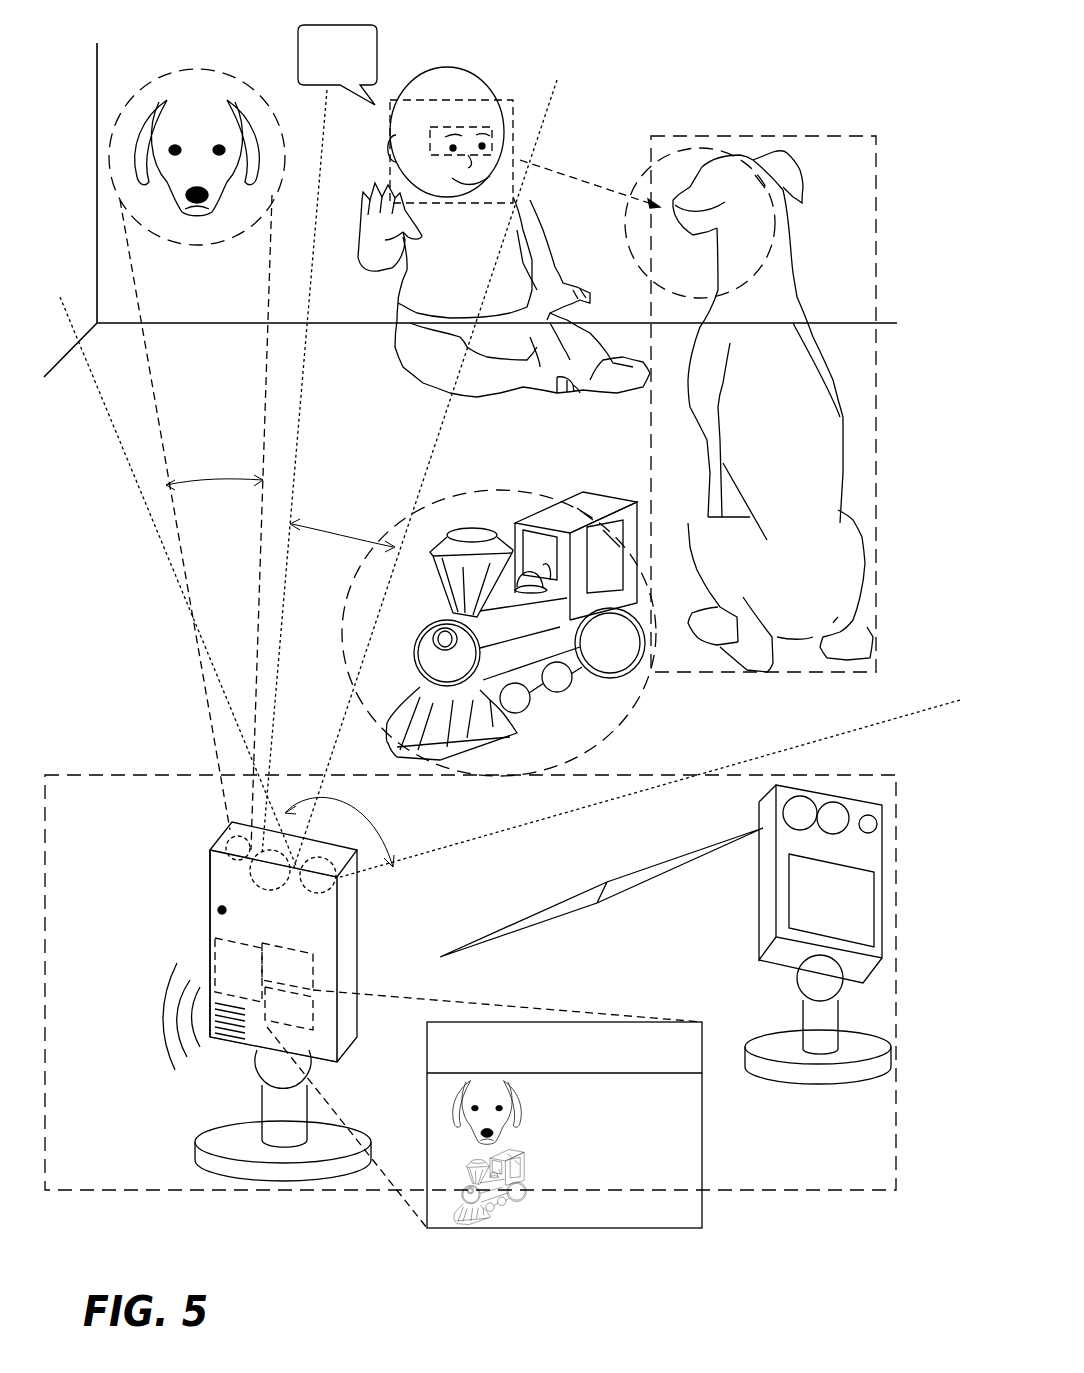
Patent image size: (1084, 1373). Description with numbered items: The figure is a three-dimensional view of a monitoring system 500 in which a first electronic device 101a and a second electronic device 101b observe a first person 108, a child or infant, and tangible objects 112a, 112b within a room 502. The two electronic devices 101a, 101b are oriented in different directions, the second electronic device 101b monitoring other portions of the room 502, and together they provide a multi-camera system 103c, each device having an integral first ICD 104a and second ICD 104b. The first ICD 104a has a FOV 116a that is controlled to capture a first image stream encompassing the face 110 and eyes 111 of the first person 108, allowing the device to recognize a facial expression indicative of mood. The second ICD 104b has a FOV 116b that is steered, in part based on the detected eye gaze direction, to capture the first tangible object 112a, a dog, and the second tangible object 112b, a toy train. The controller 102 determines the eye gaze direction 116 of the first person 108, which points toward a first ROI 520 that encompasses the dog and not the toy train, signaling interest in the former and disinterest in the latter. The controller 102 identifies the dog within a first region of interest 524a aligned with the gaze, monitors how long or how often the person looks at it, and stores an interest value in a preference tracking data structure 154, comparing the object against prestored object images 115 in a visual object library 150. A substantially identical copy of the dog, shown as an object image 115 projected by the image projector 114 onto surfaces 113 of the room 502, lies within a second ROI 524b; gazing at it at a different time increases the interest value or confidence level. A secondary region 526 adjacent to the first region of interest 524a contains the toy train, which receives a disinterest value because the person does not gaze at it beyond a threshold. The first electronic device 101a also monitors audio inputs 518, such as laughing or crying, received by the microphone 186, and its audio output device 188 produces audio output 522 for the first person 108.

The monitoring system 500 is at (502, 945).
The room 502 is at (470, 210).
The first electronic device 101a is at (207, 870).
The second electronic device 101b is at (818, 1085).
The controller 102 is at (238, 970).
The multi-camera system 103c is at (300, 921).
The first ICD 104a is at (272, 888).
The second ICD 104b is at (320, 887).
The first person 108 is at (503, 400).
The face 110 is at (515, 115).
The eyes 111 is at (485, 127).
The first tangible object 112a is at (800, 175).
The second tangible object 112b is at (598, 682).
The surfaces 113 is at (196, 522).
The image projector 114 is at (213, 885).
The object images 115 is at (240, 98).
The eye gaze direction 116 is at (615, 190).
The FOV of first ICD 116a is at (308, 475).
The FOV of second ICD 116b is at (339, 825).
The visual object library 150 is at (287, 966).
The preference tracking data structure 154 is at (483, 1107).
The microphone 186 is at (220, 914).
The audio output device 188 is at (235, 1040).
The audio inputs 518 is at (319, 440).
The first ROI 520 is at (765, 135).
The audio output 522 is at (156, 1042).
The first region of interest 524a is at (690, 150).
The second ROI 524b is at (133, 95).
The secondary region 526 is at (607, 737).